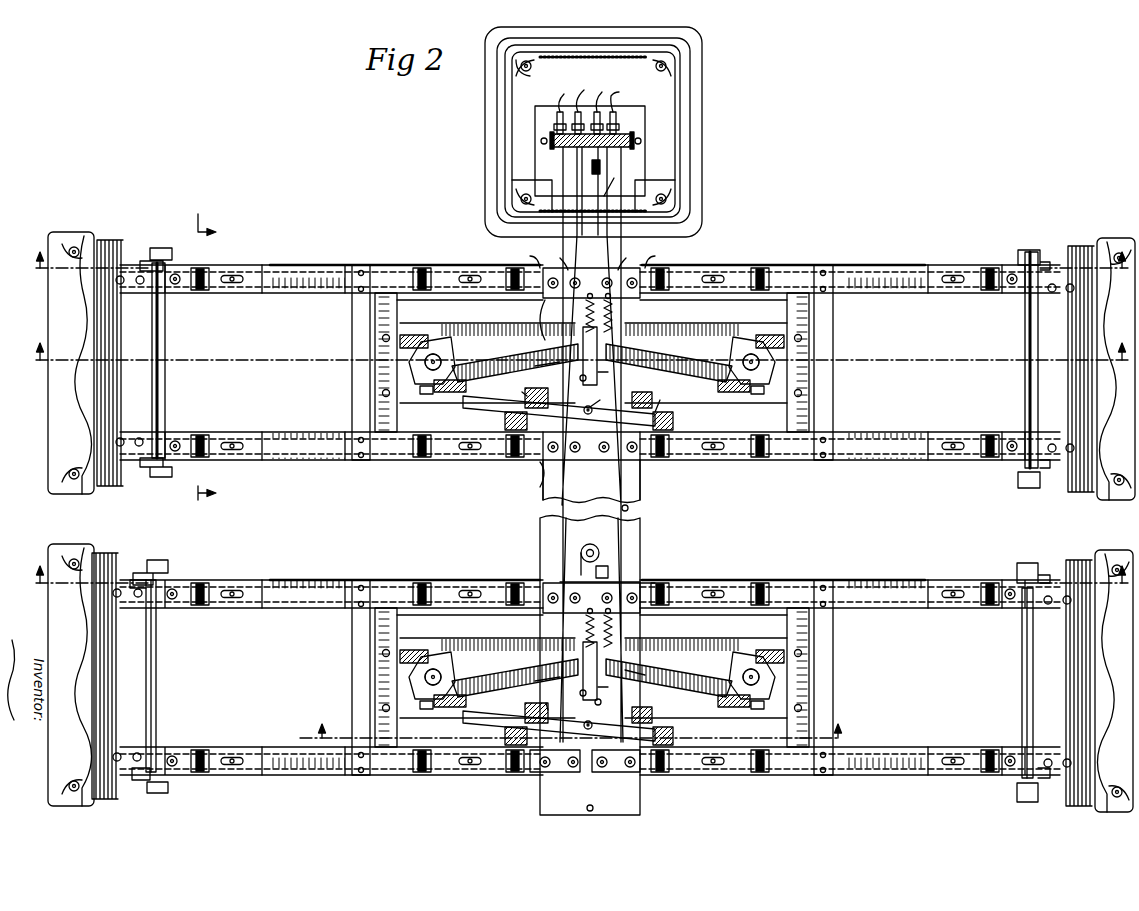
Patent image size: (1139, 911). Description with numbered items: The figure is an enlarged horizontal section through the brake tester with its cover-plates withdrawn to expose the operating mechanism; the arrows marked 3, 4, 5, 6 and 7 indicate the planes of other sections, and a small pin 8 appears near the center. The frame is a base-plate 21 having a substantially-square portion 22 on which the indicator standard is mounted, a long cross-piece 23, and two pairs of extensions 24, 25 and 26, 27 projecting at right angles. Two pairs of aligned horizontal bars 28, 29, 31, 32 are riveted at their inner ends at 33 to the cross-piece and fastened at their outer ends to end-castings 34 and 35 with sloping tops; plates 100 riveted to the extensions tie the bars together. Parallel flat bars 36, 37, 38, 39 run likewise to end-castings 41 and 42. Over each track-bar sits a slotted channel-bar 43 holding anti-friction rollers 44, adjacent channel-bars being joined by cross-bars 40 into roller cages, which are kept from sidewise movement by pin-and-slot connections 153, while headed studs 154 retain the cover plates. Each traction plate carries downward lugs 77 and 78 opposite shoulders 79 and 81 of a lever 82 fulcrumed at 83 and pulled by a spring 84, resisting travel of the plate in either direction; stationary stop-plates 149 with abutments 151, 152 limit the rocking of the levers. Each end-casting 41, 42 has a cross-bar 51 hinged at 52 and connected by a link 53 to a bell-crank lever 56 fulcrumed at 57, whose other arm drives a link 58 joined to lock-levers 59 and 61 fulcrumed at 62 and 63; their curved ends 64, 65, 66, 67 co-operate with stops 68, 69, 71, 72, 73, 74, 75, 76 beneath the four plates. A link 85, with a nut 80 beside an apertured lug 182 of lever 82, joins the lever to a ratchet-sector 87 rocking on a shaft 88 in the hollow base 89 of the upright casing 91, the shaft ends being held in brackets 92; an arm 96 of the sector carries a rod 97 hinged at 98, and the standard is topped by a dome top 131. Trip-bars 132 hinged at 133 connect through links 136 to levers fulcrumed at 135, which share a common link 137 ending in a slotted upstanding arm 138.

The section line 3- 3 is at (582, 364).
The section line 4- 4 is at (582, 584).
The section line 5- 5 is at (582, 271).
The section line 6- 6 is at (576, 735).
The section line 7- 7 is at (205, 358).
The pin 8 is at (600, 707).
The base-plate 21 is at (543, 490).
The substantially-square portion 22 is at (695, 180).
The long cross-piece 23 is at (640, 555).
The extension 24 is at (493, 390).
The extension 25 is at (705, 402).
The extension 26 is at (480, 665).
The extension 27 is at (700, 720).
The horizontal bar 28 is at (186, 292).
The horizontal bar 29 is at (672, 269).
The horizontal bar 31 is at (548, 452).
The horizontal bar 32 is at (636, 452).
The inner-end fastening 33 is at (548, 290).
The end-casting 34 is at (70, 405).
The end-casting 35 is at (1110, 412).
The flat bar 36 is at (545, 590).
The flat bar 37 is at (640, 587).
The flat bar 38 is at (552, 757).
The flat bar 39 is at (610, 768).
The cross-bar 40 is at (352, 333).
The end-casting 41 is at (70, 622).
The end-casting 42 is at (1075, 673).
The channel-bar 43 is at (383, 272).
The anti-friction roller 44 is at (422, 268).
The cross-bar 51 is at (156, 672).
The hinge 52 is at (148, 562).
The link 53 is at (200, 580).
The bell-crank lever 56 is at (560, 560).
The fulcrum 57 is at (588, 545).
The link 58 is at (628, 508).
The lock-lever 59 is at (601, 396).
The lock-lever 61 is at (566, 722).
The fulcrum 62 is at (586, 414).
The fulcrum 63 is at (588, 729).
The curved end lug 64 is at (517, 388).
The curved end lug 65 is at (666, 399).
The curved end lug 66 is at (525, 710).
The curved end lug 67 is at (652, 714).
The stop 68 is at (505, 424).
The stop 69 is at (540, 392).
The stop 71 is at (673, 423).
The stop 72 is at (645, 392).
The stop 73 is at (505, 736).
The stop 74 is at (546, 698).
The stop 75 is at (673, 736).
The stop 76 is at (640, 680).
The lug 77 is at (413, 335).
The lug 78 is at (466, 385).
The shoulder 79 is at (437, 339).
The nut 80 is at (597, 355).
The shoulder 81 is at (420, 391).
The lever 82 is at (592, 501).
The fulcrum 83 is at (441, 361).
The spring 84 is at (612, 310).
The link 85 is at (645, 490).
The ratchet-sector 87 is at (640, 173).
The horizontal shaft 88 is at (560, 142).
The hollow base 89 is at (688, 128).
The upright casing 91 is at (680, 150).
The bracket 92 is at (553, 150).
The arm 96 is at (602, 96).
The rod 97 is at (563, 110).
The hinge 98 is at (616, 130).
The plate 100 is at (393, 423).
The dome top 131 is at (593, 444).
The trip-bar 132 is at (165, 392).
The hinge 133 is at (160, 250).
The fulcrum 135 is at (603, 255).
The link 136 is at (464, 264).
The link 137 is at (612, 200).
The slotted upstanding arm 138 is at (594, 175).
The stop-plate 149 is at (580, 377).
The abutment 151 is at (614, 320).
The abutment 152 is at (608, 372).
The pin and slot connection 153 is at (234, 275).
The headed stud 154 is at (180, 275).
The apertured lug 182 is at (588, 521).